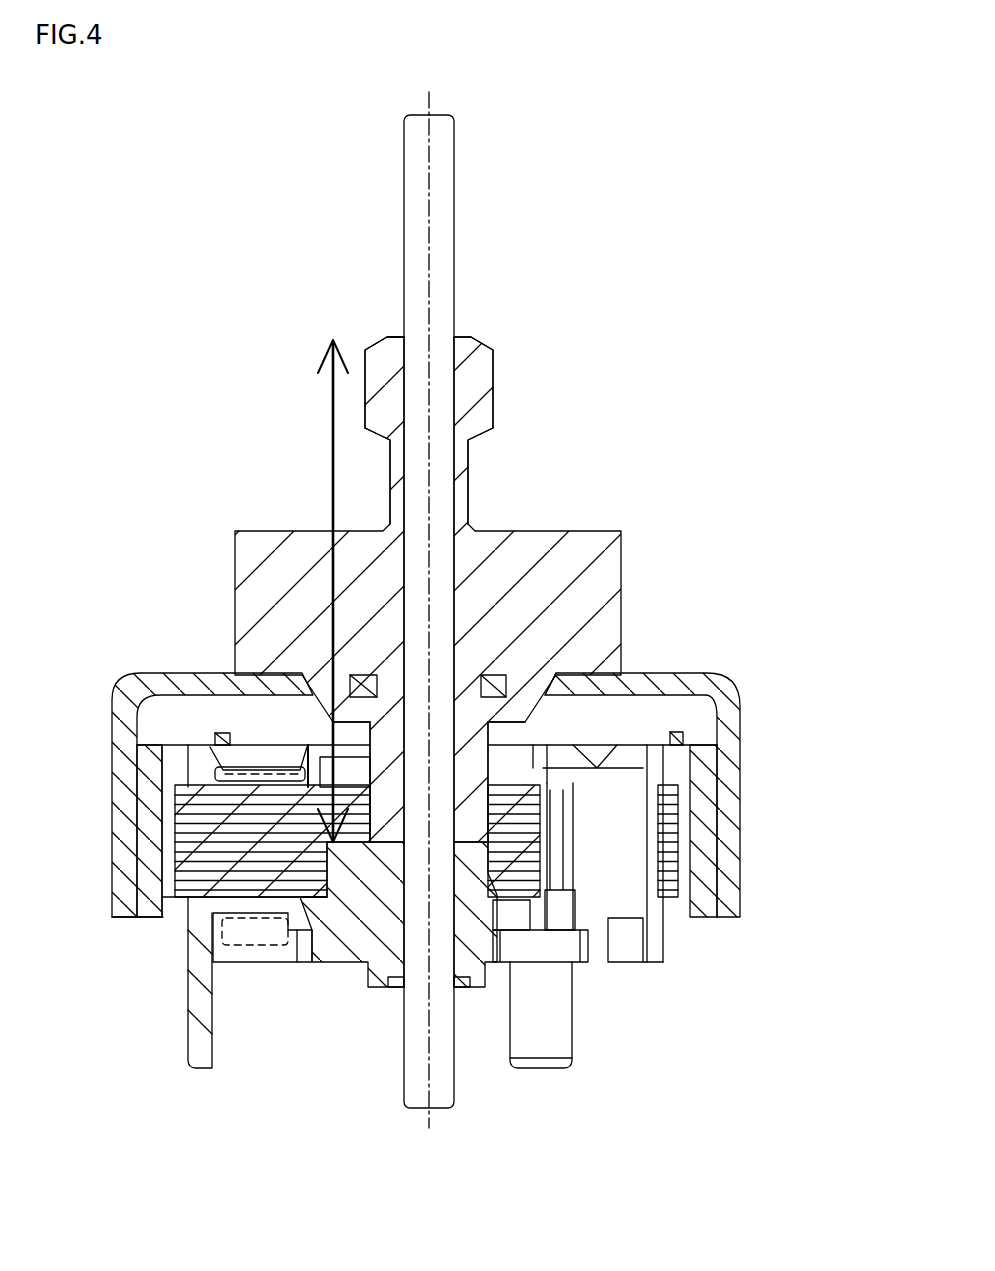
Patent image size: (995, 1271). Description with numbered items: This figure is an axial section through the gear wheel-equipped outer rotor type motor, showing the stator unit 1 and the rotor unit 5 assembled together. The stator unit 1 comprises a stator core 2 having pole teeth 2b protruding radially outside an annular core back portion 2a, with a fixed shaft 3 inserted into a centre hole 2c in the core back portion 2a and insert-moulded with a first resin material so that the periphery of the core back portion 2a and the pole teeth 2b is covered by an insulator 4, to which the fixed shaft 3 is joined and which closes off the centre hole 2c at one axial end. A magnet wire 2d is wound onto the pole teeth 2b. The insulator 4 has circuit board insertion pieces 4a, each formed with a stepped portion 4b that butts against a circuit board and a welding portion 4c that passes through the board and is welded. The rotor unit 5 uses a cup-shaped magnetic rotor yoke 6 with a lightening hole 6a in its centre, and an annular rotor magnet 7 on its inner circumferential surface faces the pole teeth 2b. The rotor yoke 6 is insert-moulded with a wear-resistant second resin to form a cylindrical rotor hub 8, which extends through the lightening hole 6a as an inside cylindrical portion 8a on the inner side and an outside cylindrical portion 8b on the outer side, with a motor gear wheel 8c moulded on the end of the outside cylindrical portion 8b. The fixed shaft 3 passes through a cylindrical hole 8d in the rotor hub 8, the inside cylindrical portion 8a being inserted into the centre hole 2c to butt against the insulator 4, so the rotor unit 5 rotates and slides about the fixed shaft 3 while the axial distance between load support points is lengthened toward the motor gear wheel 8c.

The stator unit 1 is at (235, 731).
The stator core 2 is at (175, 845).
The core back portion 2a is at (357, 845).
The pole teeth 2b is at (175, 800).
The centre hole 2c is at (476, 785).
The magnet wire 2d is at (232, 760).
The fixed shaft 3 is at (455, 211).
The insulator 4 is at (335, 958).
The circuit board insertion pieces 4a is at (200, 1070).
The stepped portions 4b is at (577, 965).
The welding portions 4c is at (550, 1066).
The rotor unit 5 is at (221, 447).
The rotor yoke 6 is at (741, 706).
The lightening hole 6a is at (556, 675).
The rotor magnet 7 is at (705, 830).
The rotor hub 8 is at (622, 541).
The inside cylindrical portion 8a is at (490, 783).
The outside cylindrical portion 8b is at (469, 471).
The motor gear wheel 8c is at (495, 360).
The cylindrical hole 8d is at (405, 337).